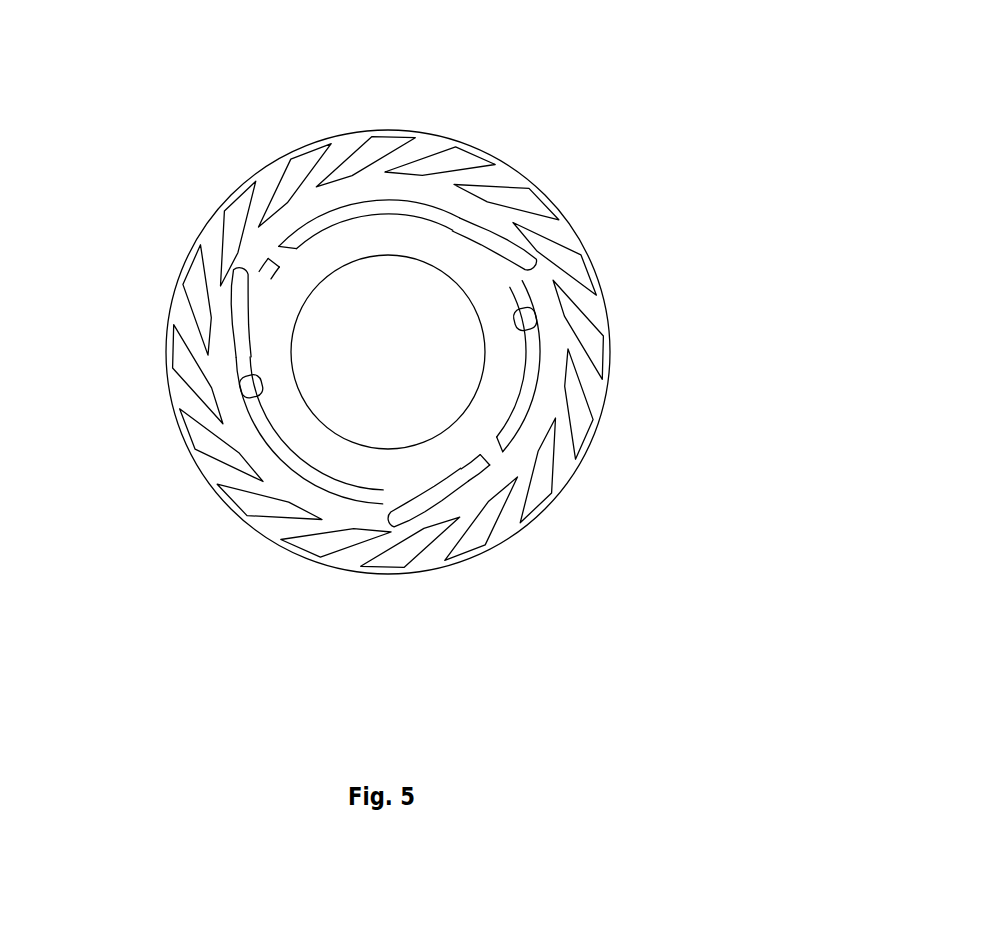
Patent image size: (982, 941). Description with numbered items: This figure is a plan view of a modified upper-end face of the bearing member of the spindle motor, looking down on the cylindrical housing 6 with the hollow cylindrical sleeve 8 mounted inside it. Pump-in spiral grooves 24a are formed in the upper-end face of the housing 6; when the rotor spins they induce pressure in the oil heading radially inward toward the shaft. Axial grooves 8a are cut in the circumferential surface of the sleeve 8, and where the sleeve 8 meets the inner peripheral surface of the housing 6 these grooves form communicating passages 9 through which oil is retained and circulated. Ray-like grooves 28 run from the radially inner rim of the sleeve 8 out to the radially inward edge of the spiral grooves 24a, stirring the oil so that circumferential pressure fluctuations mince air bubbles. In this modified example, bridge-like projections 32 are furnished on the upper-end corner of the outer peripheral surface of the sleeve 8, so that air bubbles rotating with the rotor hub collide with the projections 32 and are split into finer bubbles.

The housing 6 is at (418, 307).
The pump-in spiral grooves 24a is at (388, 297).
The sleeve 8 is at (366, 489).
The axial grooves 8a is at (398, 290).
The communicating passages 9 is at (418, 421).
The ray-like grooves 28 is at (413, 398).
The bridge-like projections 32 is at (406, 352).